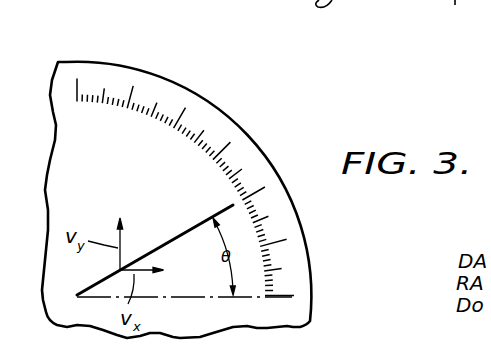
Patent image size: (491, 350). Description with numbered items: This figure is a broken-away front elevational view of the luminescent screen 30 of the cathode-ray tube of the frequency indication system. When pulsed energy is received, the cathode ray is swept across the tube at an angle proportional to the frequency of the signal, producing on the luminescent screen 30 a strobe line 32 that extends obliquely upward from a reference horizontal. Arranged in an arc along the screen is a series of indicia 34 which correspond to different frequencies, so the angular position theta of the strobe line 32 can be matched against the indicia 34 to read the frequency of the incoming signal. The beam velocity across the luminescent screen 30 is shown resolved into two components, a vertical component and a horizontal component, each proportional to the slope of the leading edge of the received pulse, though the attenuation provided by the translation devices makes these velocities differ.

The luminescent screen 30 is at (115, 63).
The strobe line 32 is at (167, 241).
The indicia 34 is at (190, 122).